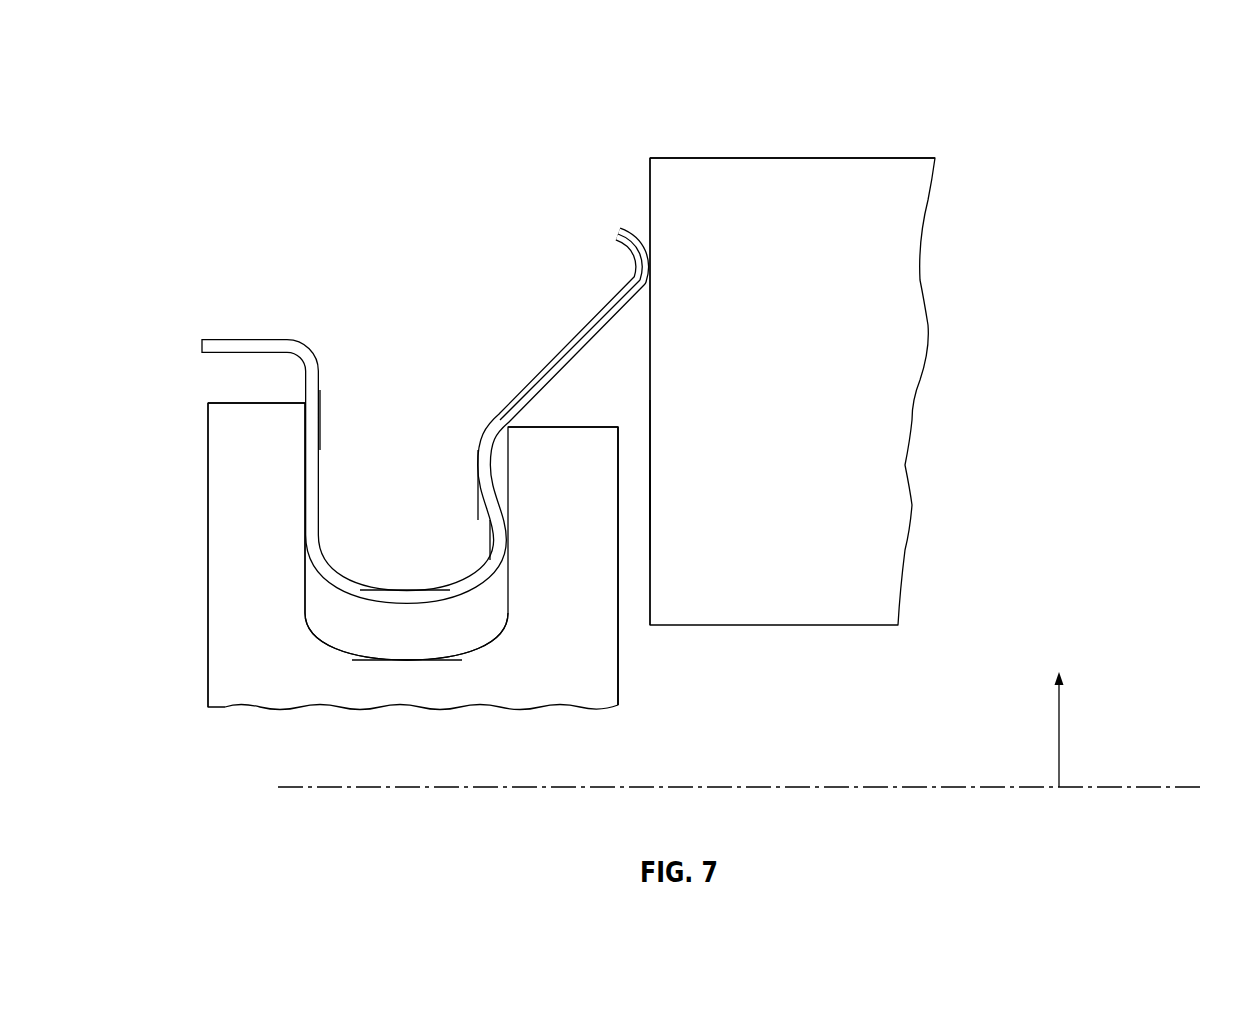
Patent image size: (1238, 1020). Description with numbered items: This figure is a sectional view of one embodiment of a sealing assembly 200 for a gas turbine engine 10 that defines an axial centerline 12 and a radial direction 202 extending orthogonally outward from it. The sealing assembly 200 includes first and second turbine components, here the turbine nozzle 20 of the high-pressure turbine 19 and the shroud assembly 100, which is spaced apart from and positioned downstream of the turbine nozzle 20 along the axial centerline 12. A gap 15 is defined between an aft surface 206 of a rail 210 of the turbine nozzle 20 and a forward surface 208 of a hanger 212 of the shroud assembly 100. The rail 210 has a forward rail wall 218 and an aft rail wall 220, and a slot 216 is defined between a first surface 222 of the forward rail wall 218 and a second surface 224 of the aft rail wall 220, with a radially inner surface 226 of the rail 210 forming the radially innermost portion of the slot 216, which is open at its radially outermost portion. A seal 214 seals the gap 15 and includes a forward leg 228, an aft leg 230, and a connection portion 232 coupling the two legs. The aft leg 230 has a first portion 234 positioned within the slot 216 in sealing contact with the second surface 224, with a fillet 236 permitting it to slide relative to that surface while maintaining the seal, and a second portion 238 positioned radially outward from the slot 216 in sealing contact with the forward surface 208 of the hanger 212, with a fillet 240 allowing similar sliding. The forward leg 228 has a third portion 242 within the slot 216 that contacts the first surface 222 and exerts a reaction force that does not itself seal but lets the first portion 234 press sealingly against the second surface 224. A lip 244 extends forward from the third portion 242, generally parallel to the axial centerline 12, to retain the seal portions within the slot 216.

The gas turbine engine 10 is at (1052, 190).
The axial centerline 12 is at (1123, 788).
The gap 15 is at (635, 628).
The high-pressure turbine 19 is at (1030, 380).
The turbine nozzle 20 is at (228, 755).
The shroud assembly 100 is at (830, 158).
The sealing assembly 200 is at (233, 108).
The radial direction 202 is at (1059, 745).
The aft surface 206 is at (650, 462).
The forward surface 208 is at (648, 188).
The rail 210 is at (207, 650).
The hanger 212 is at (737, 158).
The seal 214 is at (483, 390).
The slot 216 is at (428, 645).
The forward rail wall 218 is at (232, 555).
The aft rail wall 220 is at (600, 520).
The first surface 222 is at (303, 498).
The second surface 224 is at (510, 465).
The radially inner surface 226 is at (393, 660).
The forward leg 228 is at (328, 338).
The aft leg 230 is at (524, 302).
The connection portion 232 is at (403, 590).
The first portion 234 is at (480, 520).
The fillet 236 is at (490, 538).
The second portion 238 is at (612, 291).
The fillet 240 is at (633, 278).
The third portion 242 is at (322, 457).
The lip 244 is at (248, 338).